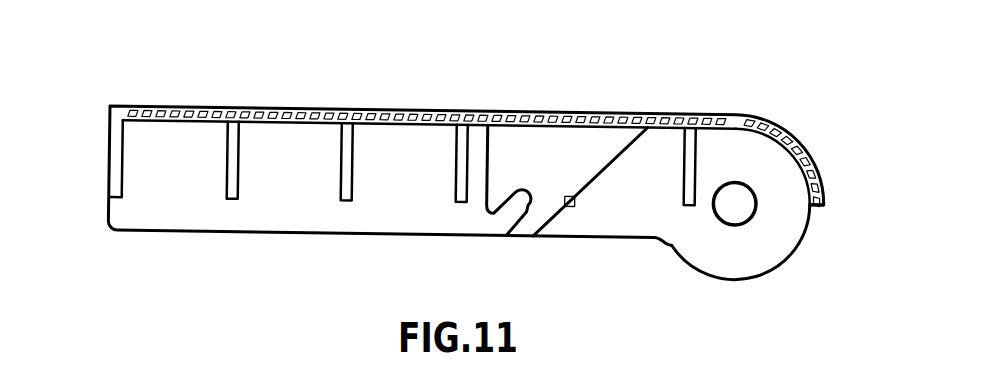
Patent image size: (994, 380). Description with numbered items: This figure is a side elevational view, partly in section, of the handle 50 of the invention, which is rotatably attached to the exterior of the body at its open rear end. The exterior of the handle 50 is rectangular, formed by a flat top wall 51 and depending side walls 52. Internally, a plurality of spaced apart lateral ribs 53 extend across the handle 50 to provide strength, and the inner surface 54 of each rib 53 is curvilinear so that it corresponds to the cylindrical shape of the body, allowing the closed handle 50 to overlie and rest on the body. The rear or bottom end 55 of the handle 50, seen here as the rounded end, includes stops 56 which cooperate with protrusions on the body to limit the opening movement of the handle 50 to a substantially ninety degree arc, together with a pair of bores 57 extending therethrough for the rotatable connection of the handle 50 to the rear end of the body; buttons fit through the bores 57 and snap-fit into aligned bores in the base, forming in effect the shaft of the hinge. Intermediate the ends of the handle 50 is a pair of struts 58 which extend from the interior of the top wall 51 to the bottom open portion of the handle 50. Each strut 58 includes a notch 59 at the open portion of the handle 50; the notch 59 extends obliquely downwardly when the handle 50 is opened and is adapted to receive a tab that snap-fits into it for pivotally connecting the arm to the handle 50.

The handle 50 is at (688, 86).
The top wall 51 is at (318, 107).
The side walls 52 is at (175, 200).
The lateral ribs 53 is at (240, 158).
The inner surface 54 is at (178, 119).
The rear end 55 is at (806, 156).
The stops 56 is at (817, 204).
The bores 57 is at (737, 204).
The struts 58 is at (571, 153).
The notch 59 is at (508, 212).